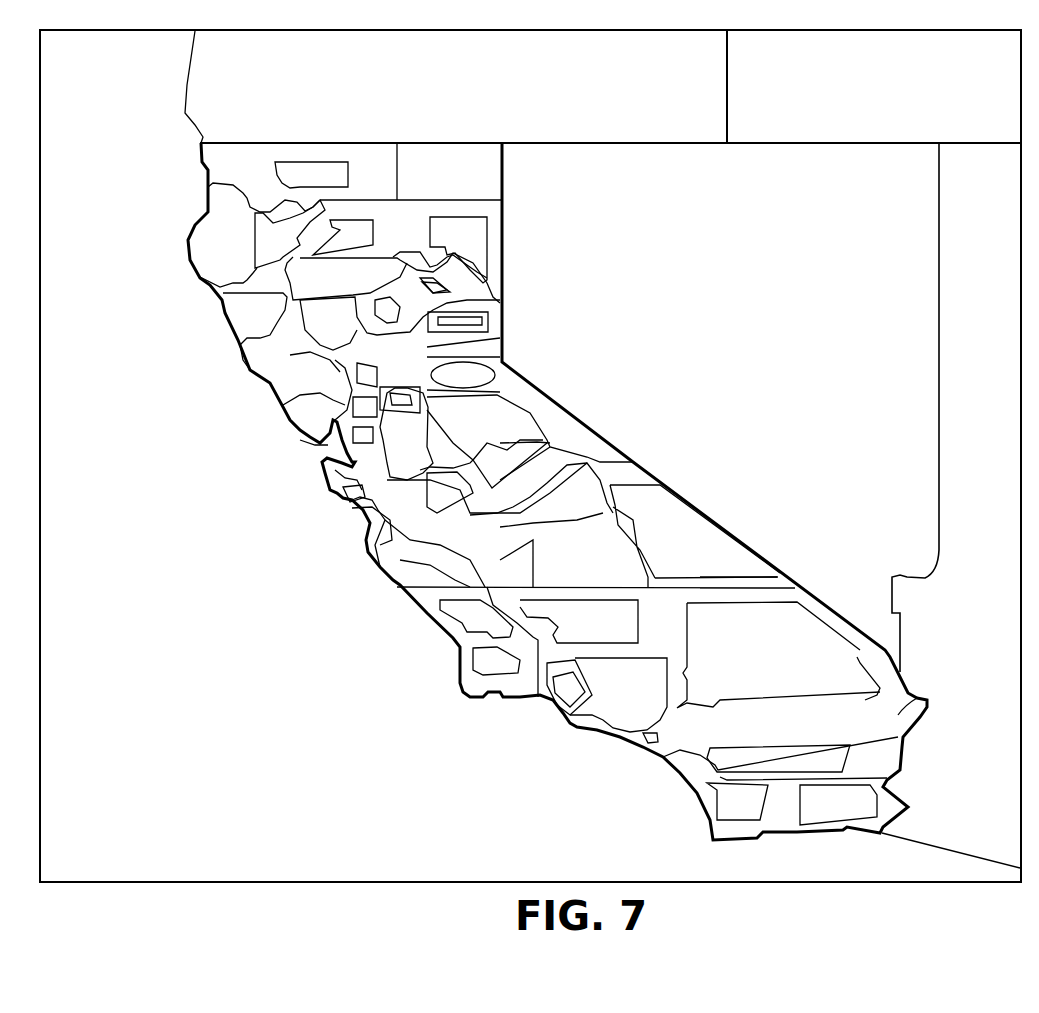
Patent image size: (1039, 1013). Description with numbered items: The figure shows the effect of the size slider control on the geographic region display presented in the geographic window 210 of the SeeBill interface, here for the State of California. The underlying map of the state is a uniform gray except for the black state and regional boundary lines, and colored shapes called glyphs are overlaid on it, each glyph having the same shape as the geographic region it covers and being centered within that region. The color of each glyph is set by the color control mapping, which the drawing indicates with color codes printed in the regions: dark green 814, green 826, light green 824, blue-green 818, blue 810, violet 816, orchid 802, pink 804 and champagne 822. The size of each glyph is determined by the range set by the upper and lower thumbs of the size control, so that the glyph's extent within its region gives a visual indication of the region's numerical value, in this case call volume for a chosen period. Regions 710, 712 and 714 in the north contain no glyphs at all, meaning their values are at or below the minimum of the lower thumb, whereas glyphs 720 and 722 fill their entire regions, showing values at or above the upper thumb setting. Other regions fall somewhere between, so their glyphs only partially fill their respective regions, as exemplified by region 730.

The geographic window 210 is at (648, 737).
The region 710 is at (430, 195).
The region 712 is at (210, 152).
The region 714 is at (230, 215).
The glyph 720 is at (588, 452).
The glyph 722 is at (637, 458).
The region 730 is at (920, 693).
The orchid color code 802 is at (288, 250).
The pink color code 804 is at (343, 452).
The blue color code 810 is at (503, 327).
The dark green color code 814 is at (470, 293).
The violet color code 816 is at (500, 383).
The blue-green color code 818 is at (437, 320).
The champagne color code 822 is at (365, 497).
The light green color code 824 is at (365, 246).
The green color code 826 is at (490, 660).